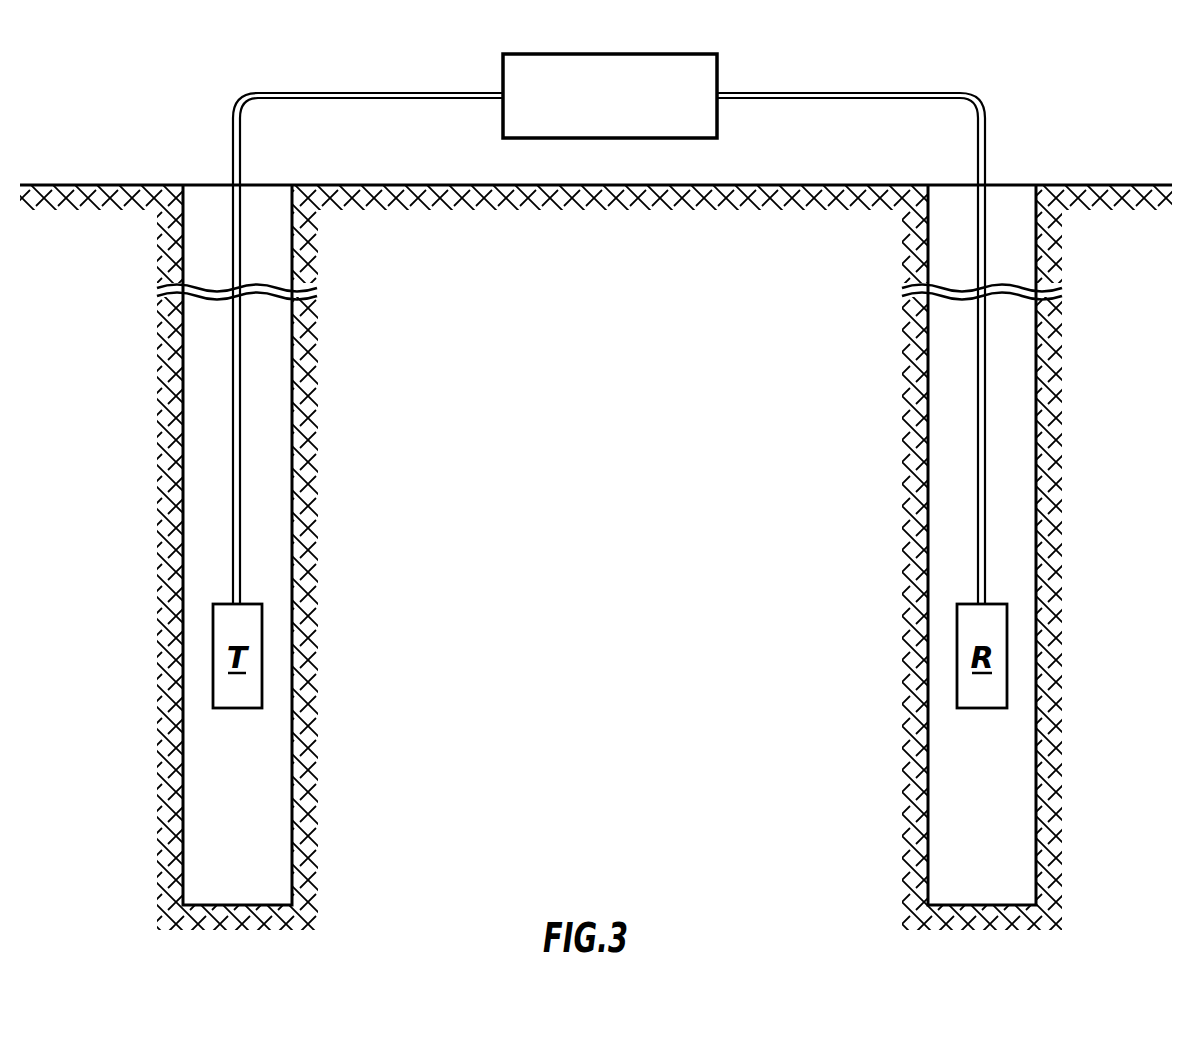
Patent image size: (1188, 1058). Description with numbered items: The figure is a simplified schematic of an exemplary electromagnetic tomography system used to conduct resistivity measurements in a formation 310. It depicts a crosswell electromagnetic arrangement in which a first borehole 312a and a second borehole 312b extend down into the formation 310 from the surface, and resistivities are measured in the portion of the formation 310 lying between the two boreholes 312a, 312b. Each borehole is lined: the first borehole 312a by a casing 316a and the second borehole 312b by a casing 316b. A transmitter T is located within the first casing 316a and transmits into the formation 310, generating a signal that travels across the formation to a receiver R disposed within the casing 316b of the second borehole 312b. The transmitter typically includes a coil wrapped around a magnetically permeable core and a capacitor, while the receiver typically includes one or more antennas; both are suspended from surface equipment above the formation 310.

The formation 310 is at (756, 277).
The first borehole 312a is at (307, 557).
The second borehole 312b is at (912, 557).
The casing 316a is at (292, 420).
The casing 316b is at (928, 420).